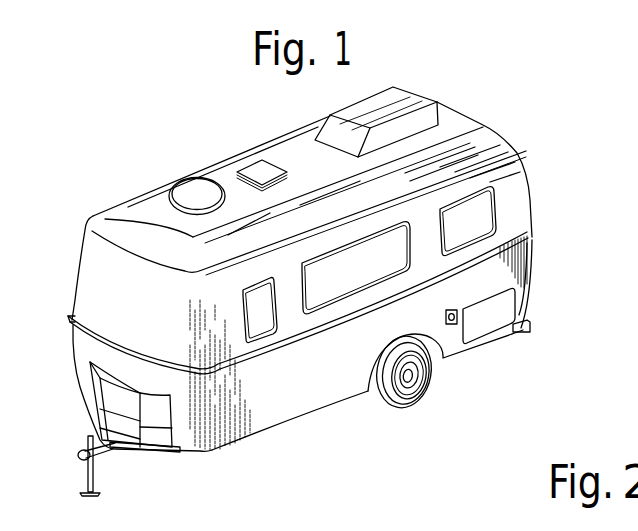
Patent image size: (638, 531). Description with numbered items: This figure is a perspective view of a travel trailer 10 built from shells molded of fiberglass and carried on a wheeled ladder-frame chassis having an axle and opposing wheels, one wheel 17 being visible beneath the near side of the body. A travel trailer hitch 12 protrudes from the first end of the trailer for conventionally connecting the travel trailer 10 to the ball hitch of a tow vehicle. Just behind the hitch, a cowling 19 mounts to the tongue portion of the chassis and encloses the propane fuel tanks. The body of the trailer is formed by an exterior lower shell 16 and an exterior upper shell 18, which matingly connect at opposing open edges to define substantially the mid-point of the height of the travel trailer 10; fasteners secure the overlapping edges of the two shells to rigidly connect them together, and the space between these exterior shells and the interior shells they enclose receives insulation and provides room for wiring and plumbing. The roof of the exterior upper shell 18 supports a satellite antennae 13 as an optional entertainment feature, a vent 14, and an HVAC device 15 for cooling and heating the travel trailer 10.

The travel trailer 10 is at (303, 297).
The travel trailer hitch 12 is at (78, 455).
The satellite antennae 13 is at (188, 180).
The vent 14 is at (252, 150).
The HVAC device 15 is at (445, 101).
The exterior lower shell 16 is at (300, 392).
The wheel 17 is at (433, 382).
The exterior upper shell 18 is at (93, 283).
The cowling 19 is at (128, 406).